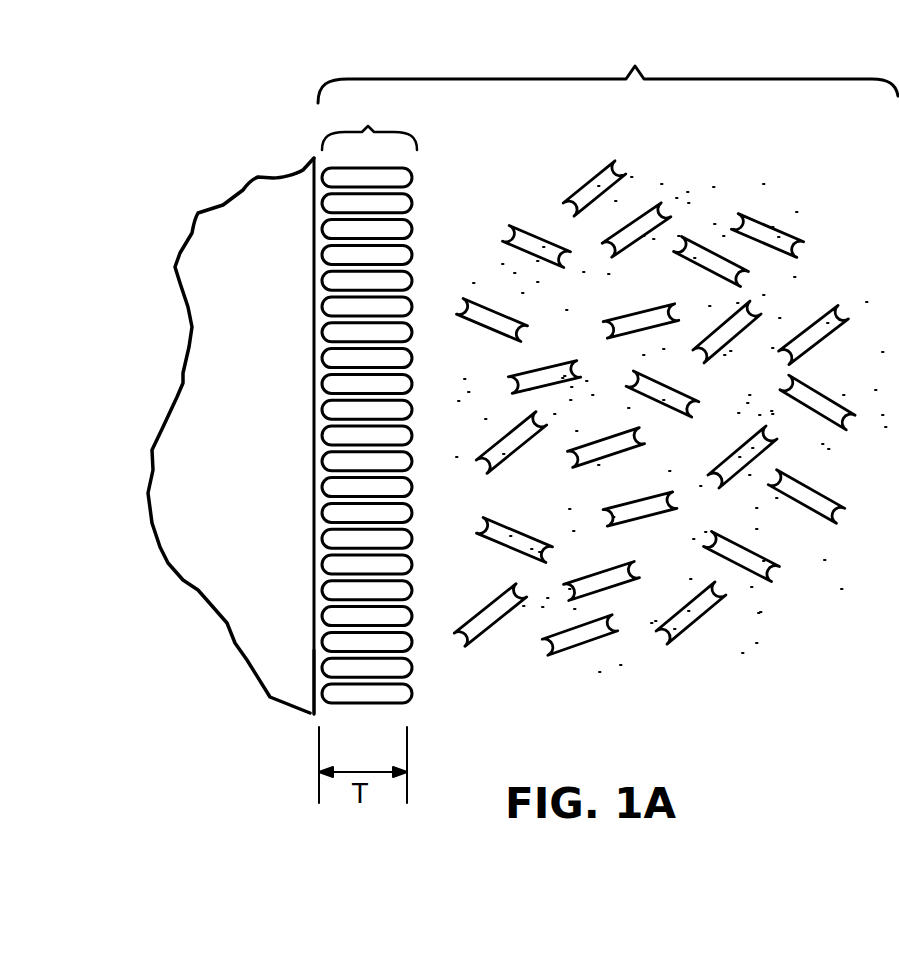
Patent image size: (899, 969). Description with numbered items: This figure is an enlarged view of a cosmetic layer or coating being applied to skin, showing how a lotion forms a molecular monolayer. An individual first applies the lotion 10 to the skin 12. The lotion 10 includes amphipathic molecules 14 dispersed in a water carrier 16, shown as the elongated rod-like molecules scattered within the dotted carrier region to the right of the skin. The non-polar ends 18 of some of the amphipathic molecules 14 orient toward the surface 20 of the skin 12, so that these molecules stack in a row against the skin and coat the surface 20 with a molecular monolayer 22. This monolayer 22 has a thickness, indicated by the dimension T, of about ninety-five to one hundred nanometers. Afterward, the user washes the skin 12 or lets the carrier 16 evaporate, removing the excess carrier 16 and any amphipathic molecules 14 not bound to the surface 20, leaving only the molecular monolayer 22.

The lotion 10 is at (608, 64).
The skin 12 is at (268, 360).
The amphipathic molecules 14 is at (798, 240).
The water carrier 16 is at (653, 598).
The non-polar ends 18 is at (330, 669).
The surface 20 is at (314, 210).
The molecular monolayer 22 is at (369, 397).